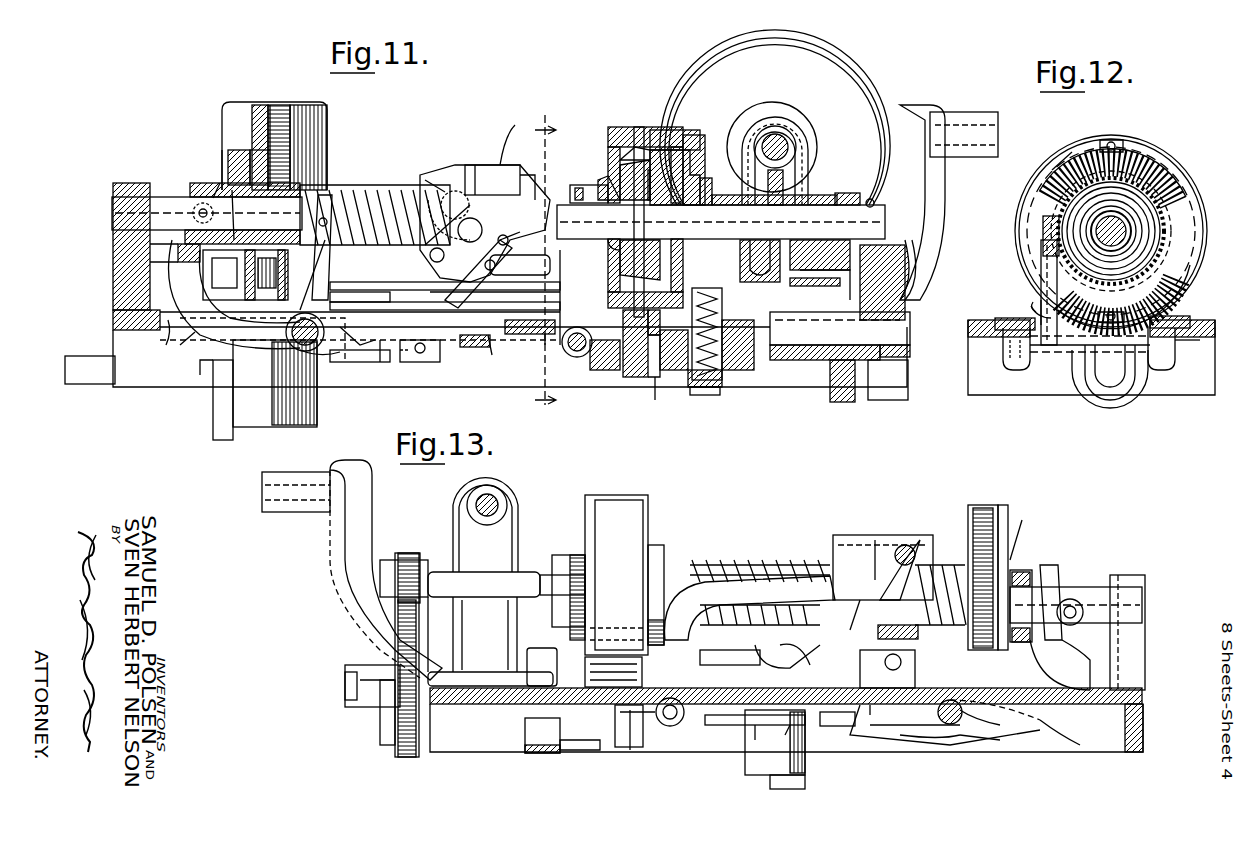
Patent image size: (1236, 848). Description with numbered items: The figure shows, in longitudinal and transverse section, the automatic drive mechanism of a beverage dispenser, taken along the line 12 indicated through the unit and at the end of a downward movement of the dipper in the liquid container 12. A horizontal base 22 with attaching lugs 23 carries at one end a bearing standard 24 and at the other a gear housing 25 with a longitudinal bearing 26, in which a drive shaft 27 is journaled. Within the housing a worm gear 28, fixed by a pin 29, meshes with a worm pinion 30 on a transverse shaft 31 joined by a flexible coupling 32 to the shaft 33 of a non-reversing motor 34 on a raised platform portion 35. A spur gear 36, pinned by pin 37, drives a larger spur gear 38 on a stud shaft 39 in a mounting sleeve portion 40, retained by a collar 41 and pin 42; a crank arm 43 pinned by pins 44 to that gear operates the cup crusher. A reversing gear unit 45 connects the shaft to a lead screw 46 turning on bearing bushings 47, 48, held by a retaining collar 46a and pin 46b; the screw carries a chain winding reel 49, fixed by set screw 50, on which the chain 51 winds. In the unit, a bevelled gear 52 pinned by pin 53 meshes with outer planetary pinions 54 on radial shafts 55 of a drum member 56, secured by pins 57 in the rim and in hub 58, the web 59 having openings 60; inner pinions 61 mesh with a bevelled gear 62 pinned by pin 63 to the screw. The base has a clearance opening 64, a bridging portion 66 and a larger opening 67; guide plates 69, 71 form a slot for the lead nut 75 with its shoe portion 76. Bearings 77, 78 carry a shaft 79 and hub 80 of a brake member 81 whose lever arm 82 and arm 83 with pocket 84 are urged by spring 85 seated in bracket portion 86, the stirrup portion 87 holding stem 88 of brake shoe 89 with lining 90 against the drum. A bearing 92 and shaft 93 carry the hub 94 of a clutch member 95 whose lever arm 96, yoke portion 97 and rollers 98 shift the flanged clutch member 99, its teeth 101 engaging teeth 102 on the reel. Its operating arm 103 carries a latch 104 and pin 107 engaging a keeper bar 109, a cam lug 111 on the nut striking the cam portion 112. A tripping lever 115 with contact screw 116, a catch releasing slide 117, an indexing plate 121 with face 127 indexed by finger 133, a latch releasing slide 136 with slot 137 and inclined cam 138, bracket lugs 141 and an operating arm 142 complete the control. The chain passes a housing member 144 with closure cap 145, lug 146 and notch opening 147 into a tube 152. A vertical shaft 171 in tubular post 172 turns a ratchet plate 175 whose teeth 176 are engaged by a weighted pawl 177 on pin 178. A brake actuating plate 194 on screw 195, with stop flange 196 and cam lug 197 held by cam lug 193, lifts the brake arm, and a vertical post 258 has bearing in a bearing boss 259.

In FIG. 11, the liquid container 12 is at (545, 263).
In FIG. 11, the base 22 is at (120, 315).
In FIG. 12, the base 22 is at (980, 322).
In FIG. 13, the base 22 is at (1103, 705).
In FIG. 11, the attaching lugs 23 is at (75, 356).
In FIG. 11, the bearing standard 24 is at (130, 243).
In FIG. 13, the bearing standard 24 is at (1145, 584).
In FIG. 11, the gear housing 25 is at (805, 150).
In FIG. 13, the gear housing 25 is at (460, 495).
In FIG. 11, the longitudinal bearing 26 is at (825, 195).
In FIG. 13, the longitudinal bearing 26 is at (435, 572).
In FIG. 11, the drive shaft 27 is at (720, 205).
In FIG. 12, the drive shaft 27 is at (1140, 228).
In FIG. 13, the drive shaft 27 is at (1120, 587).
In FIG. 11, the worm gear 28 is at (768, 175).
In FIG. 11, the pin 29 is at (740, 258).
In FIG. 11, the worm pinion 30 is at (765, 140).
In FIG. 11, the transverse horizontal shaft 31 is at (790, 145).
In FIG. 13, the flexible coupling 32 is at (507, 505).
In FIG. 13, the motor shaft 33 is at (485, 516).
In FIG. 11, the driving motor 34 is at (698, 72).
In FIG. 11, the raised platform portion 35 is at (900, 292).
In FIG. 11, the spur gear 36 is at (848, 193).
In FIG. 13, the spur gear 36 is at (408, 553).
In FIG. 11, the pin 37 is at (868, 198).
In FIG. 11, the spur gear 38 is at (842, 402).
In FIG. 13, the spur gear 38 is at (407, 757).
In FIG. 11, the stud shaft 39 is at (895, 328).
In FIG. 13, the stud shaft 39 is at (345, 688).
In FIG. 11, the mounting sleeve portion 40 is at (800, 360).
In FIG. 13, the mounting sleeve portion 40 is at (437, 657).
In FIG. 11, the collar 41 is at (905, 352).
In FIG. 13, the collar 41 is at (360, 704).
In FIG. 11, the pin 42 is at (888, 380).
In FIG. 11, the crank arm 43 is at (928, 230).
In FIG. 13, the crank arm 43 is at (345, 580).
In FIG. 11, the pins 44 is at (880, 285).
In FIG. 11, the reversing gear unit 45 is at (615, 119).
In FIG. 12, the reversing gear unit 45 is at (1071, 141).
In FIG. 13, the reversing gear unit 45 is at (627, 489).
In FIG. 11, the lead screw 46 is at (420, 185).
In FIG. 12, the lead screw 46 is at (1128, 236).
In FIG. 13, the lead screw 46 is at (775, 565).
In FIG. 11, the retaining collar 46a is at (225, 150).
In FIG. 13, the retaining collar 46a is at (1030, 560).
In FIG. 11, the pin 46b is at (222, 150).
In FIG. 11, the flanged end bearing bushing 47 is at (605, 239).
In FIG. 11, the flanged end bearing bushing 48 is at (242, 223).
In FIG. 11, the chain winding reel 49 is at (260, 150).
In FIG. 13, the chain winding reel 49 is at (1010, 522).
In FIG. 11, the set screw 50 is at (245, 275).
In FIG. 11, the chain 51 is at (278, 112).
In FIG. 13, the chain 51 is at (990, 515).
In FIG. 11, the bevelled gear 52 is at (690, 165).
In FIG. 12, the bevelled gear 52 is at (1165, 178).
In FIG. 13, the bevelled gear 52 is at (578, 520).
In FIG. 11, the pin 53 is at (706, 178).
In FIG. 11, the outer planetary bevelled pinions 54 is at (620, 165).
In FIG. 12, the outer planetary bevelled pinions 54 is at (1135, 165).
In FIG. 11, the radial shafts 55 is at (640, 130).
In FIG. 11, the cylindrical drum member 56 is at (690, 135).
In FIG. 12, the cylindrical drum member 56 is at (1155, 160).
In FIG. 13, the cylindrical drum member 56 is at (594, 498).
In FIG. 11, the pins 57 is at (700, 140).
In FIG. 11, the hub 58 is at (640, 180).
In FIG. 12, the web 59 is at (1170, 215).
In FIG. 12, the openings 60 is at (1168, 200).
In FIG. 11, the inner planetary bevelled pinions 61 is at (620, 160).
In FIG. 12, the inner planetary bevelled pinions 61 is at (1065, 170).
In FIG. 11, the bevelled gear 62 is at (598, 185).
In FIG. 12, the bevelled gear 62 is at (1045, 200).
In FIG. 13, the bevelled gear 62 is at (656, 548).
In FIG. 11, the pin 63 is at (575, 190).
In FIG. 11, the clearance opening 64 is at (161, 337).
In FIG. 11, the bridging portion 66 is at (518, 334).
In FIG. 11, the clearance opening 67 is at (545, 340).
In FIG. 12, the clearance opening 67 is at (1175, 352).
In FIG. 12, the forward guide and bearing plate 69 is at (1190, 320).
In FIG. 12, the rearward guide and bearing plate 71 is at (998, 322).
In FIG. 11, the lead nut 75 is at (498, 165).
In FIG. 13, the lead nut 75 is at (920, 540).
In FIG. 11, the shoe portion 76 is at (374, 289).
In FIG. 12, the shaft bearing 77 is at (1185, 370).
In FIG. 12, the shaft bearing 78 is at (1008, 366).
In FIG. 13, the shaft bearing 78 is at (680, 724).
In FIG. 11, the shaft 79 is at (575, 355).
In FIG. 12, the shaft 79 is at (1022, 372).
In FIG. 11, the hub 80 is at (600, 360).
In FIG. 12, the hub 80 is at (1050, 356).
In FIG. 12, the brake member 81 is at (1032, 290).
In FIG. 13, the brake member 81 is at (650, 729).
In FIG. 11, the operating lever arm 82 is at (558, 340).
In FIG. 12, the operating lever arm 82 is at (1043, 250).
In FIG. 13, the operating lever arm 82 is at (733, 582).
In FIG. 11, the arm 83 is at (652, 378).
In FIG. 13, the arm 83 is at (633, 748).
In FIG. 11, the pocket 84 is at (675, 355).
In FIG. 13, the pocket 84 is at (540, 648).
In FIG. 11, the helical expansion spring 85 is at (715, 387).
In FIG. 13, the helical expansion spring 85 is at (535, 755).
In FIG. 11, the U-shaped bracket portion 86 is at (698, 395).
In FIG. 12, the U-shaped bracket portion 86 is at (1132, 395).
In FIG. 13, the U-shaped bracket portion 86 is at (552, 753).
In FIG. 11, the stirrup portion 87 is at (625, 377).
In FIG. 12, the stirrup portion 87 is at (1102, 390).
In FIG. 13, the stirrup portion 87 is at (605, 750).
In FIG. 11, the operating stem portion 88 is at (655, 400).
In FIG. 12, the operating stem portion 88 is at (1108, 385).
In FIG. 13, the operating stem portion 88 is at (615, 718).
In FIG. 11, the brake shoe 89 is at (690, 370).
In FIG. 12, the brake shoe 89 is at (1031, 310).
In FIG. 13, the brake shoe 89 is at (585, 668).
In FIG. 12, the brake lining 90 is at (1033, 302).
In FIG. 13, the brake lining 90 is at (881, 713).
In FIG. 13, the shaft bearing 92 is at (950, 725).
In FIG. 11, the shaft 93 is at (290, 350).
In FIG. 13, the shaft 93 is at (970, 722).
In FIG. 11, the hub 94 is at (290, 335).
In FIG. 13, the hub 94 is at (930, 745).
In FIG. 11, the clutch member 95 is at (186, 336).
In FIG. 13, the clutch member 95 is at (1042, 730).
In FIG. 11, the lever arm 96 is at (170, 300).
In FIG. 13, the lever arm 96 is at (1070, 683).
In FIG. 11, the yoke portion 97 is at (182, 237).
In FIG. 13, the yoke portion 97 is at (1064, 650).
In FIG. 11, the rollers 98 is at (182, 197).
In FIG. 13, the rollers 98 is at (1078, 600).
In FIG. 11, the flanged clutch member 99 is at (215, 183).
In FIG. 13, the flanged clutch member 99 is at (1050, 565).
In FIG. 11, the V-shaped teeth 101 is at (212, 213).
In FIG. 13, the V-shaped teeth 101 is at (1068, 598).
In FIG. 11, the V-shaped teeth 102 is at (240, 175).
In FIG. 13, the V-shaped teeth 102 is at (1025, 570).
In FIG. 11, the clutch operating arm 103 is at (342, 362).
In FIG. 13, the clutch operating arm 103 is at (792, 728).
In FIG. 11, the latch 104 is at (470, 348).
In FIG. 11, the transverse pin 107 is at (424, 355).
In FIG. 11, the keeper bar 109 is at (490, 350).
In FIG. 13, the keeper bar 109 is at (760, 734).
In FIG. 11, the cam lug 111 is at (480, 299).
In FIG. 13, the cam lug 111 is at (915, 738).
In FIG. 11, the cam portion 112 is at (430, 347).
In FIG. 13, the cam portion 112 is at (839, 730).
In FIG. 11, the tripping lever 115 is at (328, 195).
In FIG. 11, the adjustable contact screw 116 is at (340, 185).
In FIG. 11, the catch releasing slide 117 is at (382, 355).
In FIG. 11, the indexing plate 121 is at (455, 165).
In FIG. 11, the peripheral face 127 is at (424, 175).
In FIG. 11, the indexing finger 133 is at (530, 175).
In FIG. 11, the latch releasing slide 136 is at (352, 306).
In FIG. 13, the latch releasing slide 136 is at (865, 740).
In FIG. 11, the slot 137 is at (367, 337).
In FIG. 13, the slot 137 is at (994, 740).
In FIG. 11, the inclined cam 138 is at (352, 293).
In FIG. 11, the bracket lugs 141 is at (262, 335).
In FIG. 13, the bracket lugs 141 is at (985, 708).
In FIG. 13, the operating arm 142 is at (948, 568).
In FIG. 11, the cylindrical housing member 144 is at (328, 122).
In FIG. 11, the flanged closure cap 145 is at (315, 105).
In FIG. 11, the peripheral lug 146 is at (285, 105).
In FIG. 11, the notch opening 147 is at (256, 105).
In FIG. 11, the cylindrical tube 152 is at (315, 407).
In FIG. 13, the vertical shaft 171 is at (805, 784).
In FIG. 13, the tubular post 172 is at (755, 770).
In FIG. 11, the ratchet plate 175 is at (525, 267).
In FIG. 13, the ratchet plate 175 is at (752, 715).
In FIG. 11, the ratchet teeth 176 is at (478, 274).
In FIG. 13, the ratchet teeth 176 is at (758, 650).
In FIG. 11, the weighted pawl 177 is at (510, 270).
In FIG. 13, the weighted pawl 177 is at (800, 648).
In FIG. 11, the pin 178 is at (456, 225).
In FIG. 13, the pin 178 is at (887, 669).
In FIG. 13, the cam lug 193 is at (880, 625).
In FIG. 13, the brake actuating plate 194 is at (875, 540).
In FIG. 13, the screw 195 is at (907, 545).
In FIG. 11, the stop flange 196 is at (509, 135).
In FIG. 13, the stop flange 196 is at (845, 535).
In FIG. 13, the cam lug 197 is at (845, 600).
In FIG. 11, the vertical post 258 is at (218, 435).
In FIG. 11, the bearing boss 259 is at (205, 365).